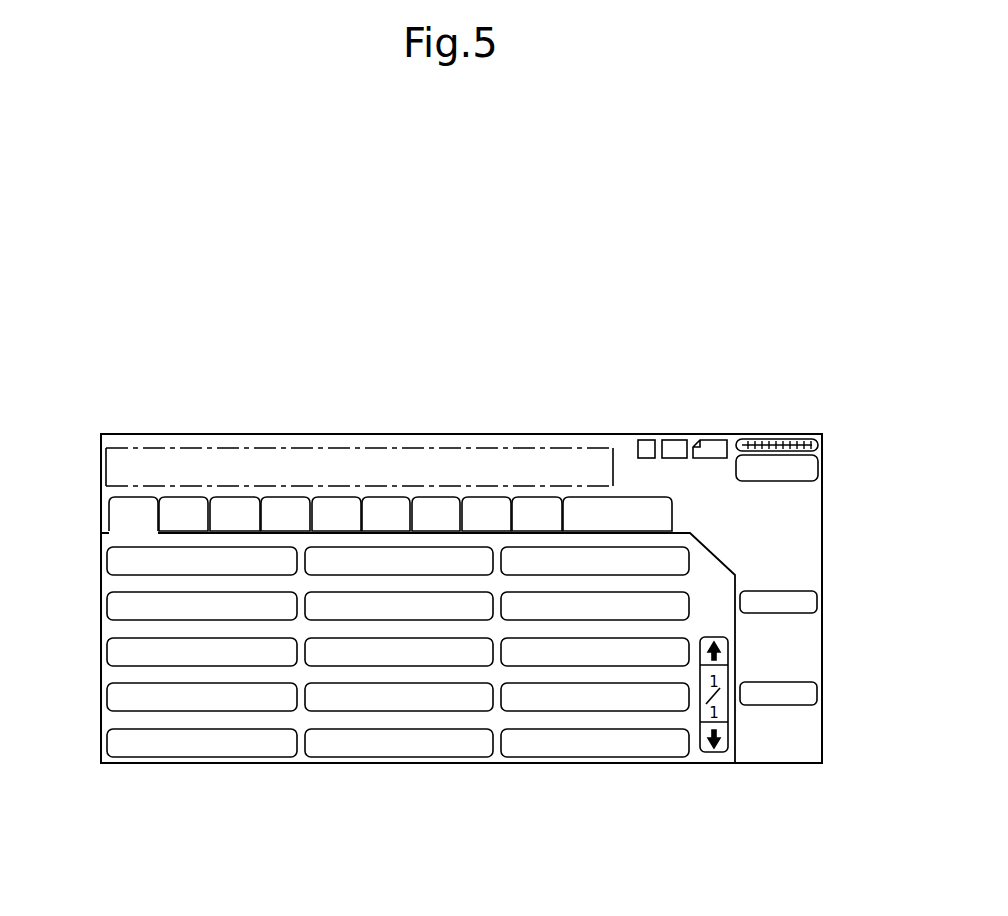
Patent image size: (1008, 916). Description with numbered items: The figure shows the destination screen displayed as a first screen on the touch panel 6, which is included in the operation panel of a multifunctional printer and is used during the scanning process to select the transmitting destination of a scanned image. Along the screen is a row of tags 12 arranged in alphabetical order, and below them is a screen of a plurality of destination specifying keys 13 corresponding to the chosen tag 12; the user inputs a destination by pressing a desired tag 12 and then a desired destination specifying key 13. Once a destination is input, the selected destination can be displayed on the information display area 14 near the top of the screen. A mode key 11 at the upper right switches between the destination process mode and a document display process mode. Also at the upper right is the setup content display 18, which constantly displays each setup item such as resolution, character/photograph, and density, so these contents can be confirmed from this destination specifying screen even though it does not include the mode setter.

The touch panel 6 is at (278, 411).
The mode key 11 is at (807, 463).
The tag 12 is at (131, 503).
The destination specifying key 13 is at (103, 556).
The information display area 14 is at (389, 448).
The setup content display 18 is at (710, 400).